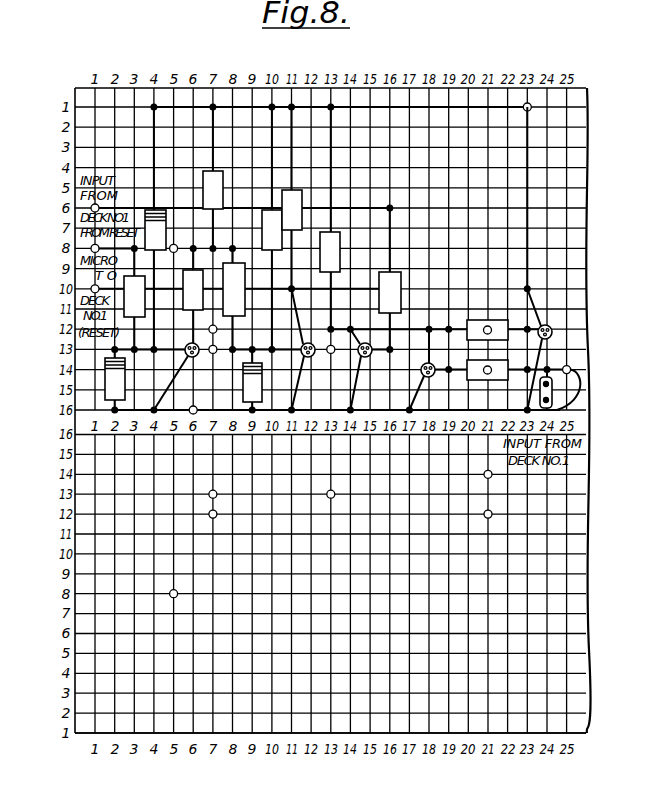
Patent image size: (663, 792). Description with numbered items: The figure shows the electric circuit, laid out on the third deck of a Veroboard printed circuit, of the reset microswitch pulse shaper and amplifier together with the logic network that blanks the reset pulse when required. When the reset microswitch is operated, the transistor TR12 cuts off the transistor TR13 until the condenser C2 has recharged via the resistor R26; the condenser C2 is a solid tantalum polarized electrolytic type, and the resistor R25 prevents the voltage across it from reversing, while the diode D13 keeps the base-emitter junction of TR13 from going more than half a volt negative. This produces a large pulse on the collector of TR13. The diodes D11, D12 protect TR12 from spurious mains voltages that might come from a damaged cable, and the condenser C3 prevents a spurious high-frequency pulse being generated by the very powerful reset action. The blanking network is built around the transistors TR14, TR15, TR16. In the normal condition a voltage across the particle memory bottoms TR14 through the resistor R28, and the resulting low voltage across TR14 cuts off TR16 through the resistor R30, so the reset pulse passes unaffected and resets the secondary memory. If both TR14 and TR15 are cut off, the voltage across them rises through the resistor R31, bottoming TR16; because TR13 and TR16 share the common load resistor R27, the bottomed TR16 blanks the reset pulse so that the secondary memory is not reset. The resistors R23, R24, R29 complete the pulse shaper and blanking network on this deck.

The resistor R23 is at (145, 312).
The resistor R24 is at (203, 176).
The resistor R25 is at (186, 270).
The resistor R26 is at (262, 215).
The common load resistor R27 is at (300, 194).
The resistor R28 is at (401, 275).
The resistor R29 is at (487, 380).
The resistor R30 is at (489, 320).
The resistor R31 is at (339, 237).
The condenser C2 is at (245, 284).
The condenser C3 is at (552, 392).
The diode D11 is at (155, 228).
The diode D12 is at (115, 379).
The diode D13 is at (252, 379).
The transistor TR12 is at (174, 376).
The transistor TR13 is at (293, 349).
The transistor TR14 is at (358, 369).
The transistor TR15 is at (408, 369).
The transistor TR16 is at (550, 258).